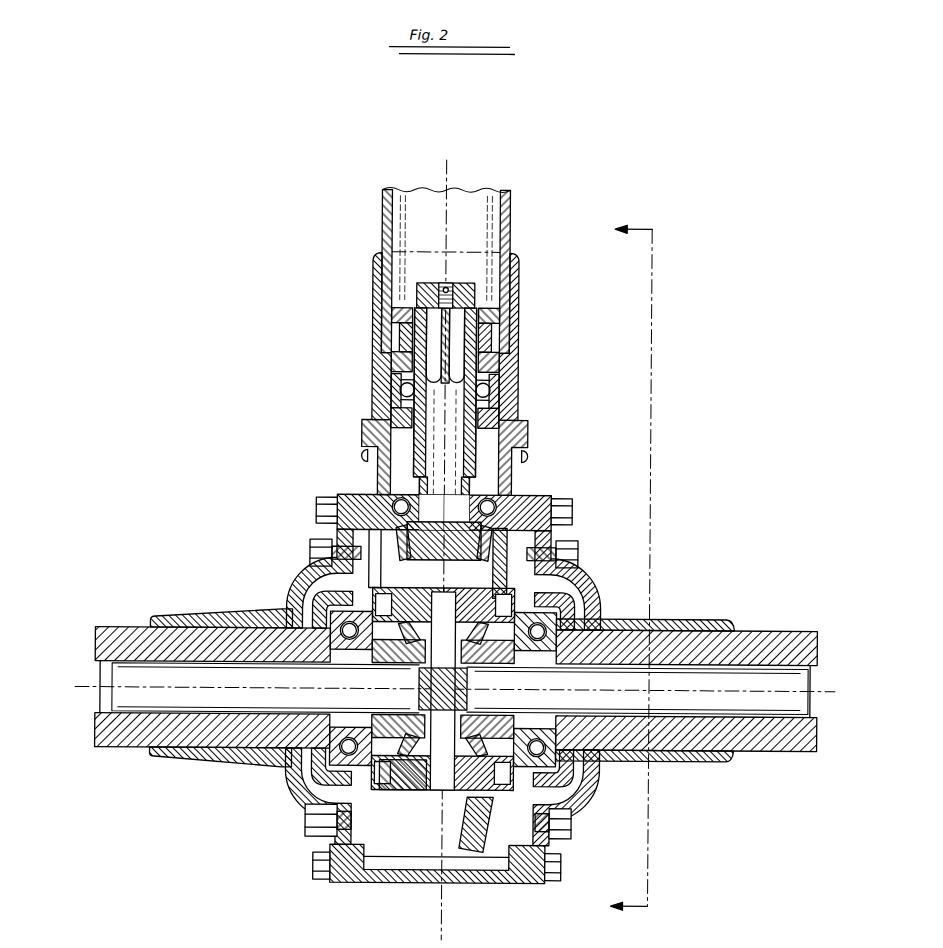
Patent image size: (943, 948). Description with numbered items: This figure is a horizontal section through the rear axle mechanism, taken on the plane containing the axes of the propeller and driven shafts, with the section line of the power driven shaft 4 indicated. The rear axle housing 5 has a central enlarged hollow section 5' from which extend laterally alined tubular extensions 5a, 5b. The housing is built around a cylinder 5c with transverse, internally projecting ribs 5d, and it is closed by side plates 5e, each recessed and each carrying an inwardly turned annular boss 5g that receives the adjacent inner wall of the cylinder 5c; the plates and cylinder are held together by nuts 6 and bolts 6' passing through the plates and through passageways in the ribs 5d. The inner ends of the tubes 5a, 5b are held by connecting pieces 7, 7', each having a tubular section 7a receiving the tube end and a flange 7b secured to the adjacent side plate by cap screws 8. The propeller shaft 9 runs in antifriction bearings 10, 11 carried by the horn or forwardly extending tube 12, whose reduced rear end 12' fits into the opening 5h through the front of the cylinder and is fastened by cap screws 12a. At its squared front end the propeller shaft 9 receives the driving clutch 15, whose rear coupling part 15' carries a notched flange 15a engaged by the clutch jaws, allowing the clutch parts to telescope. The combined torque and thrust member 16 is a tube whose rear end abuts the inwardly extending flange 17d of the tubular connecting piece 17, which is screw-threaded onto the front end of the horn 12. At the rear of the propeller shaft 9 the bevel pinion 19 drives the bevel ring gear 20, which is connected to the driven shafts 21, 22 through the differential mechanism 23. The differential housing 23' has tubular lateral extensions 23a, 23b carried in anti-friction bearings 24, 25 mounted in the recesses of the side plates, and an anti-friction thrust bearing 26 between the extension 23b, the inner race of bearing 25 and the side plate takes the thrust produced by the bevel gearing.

The combined torque and thrust member 16 is at (509, 222).
The driving clutch 15 is at (469, 337).
The rear part of the coupling 15' is at (406, 308).
The notched flange 15a is at (390, 317).
The tubular connecting piece 17 is at (390, 358).
The inwardly extending flange 17d is at (505, 360).
The antifriction bearing 11 is at (506, 385).
The propeller shaft 9 is at (435, 440).
The horn or forwardly extending tube 12 is at (480, 451).
The cap screws 12a is at (362, 452).
The housing 5 is at (485, 533).
The opening 5h is at (340, 496).
The antifriction bearing 10 is at (548, 497).
The flange 7b is at (318, 520).
The bolts or cap screws 8 is at (315, 555).
The connecting piece 7 is at (425, 687).
The anti-friction thrust bearing 26 is at (596, 592).
The connecting piece 7' is at (472, 675).
The reduced rear end of tube 12 12' is at (385, 558).
The driving gear 19 is at (428, 564).
The driven gear 20 is at (484, 566).
The tubular extension 5a is at (118, 630).
The tubular extension 5b is at (788, 630).
The tubular section 7a is at (198, 618).
The driven shaft 21 is at (113, 749).
The driven shaft 22 is at (780, 718).
The tubular lateral extension 23a is at (318, 774).
The tubular lateral extension 23b is at (568, 776).
The differential mechanism 23 is at (443, 705).
The differential housing 23' is at (400, 789).
The anti-friction bearing 24 is at (306, 822).
The anti-friction bearing 25 is at (572, 820).
The side plate 5e is at (330, 851).
The nuts 6 is at (313, 884).
The bolts 6' is at (441, 874).
The annular boss 5g is at (368, 882).
The cylinder 5c is at (408, 883).
The ribs 5d is at (452, 872).
The central enlarged hollow section 5' is at (477, 862).
The power driven shaft 4 is at (631, 570).